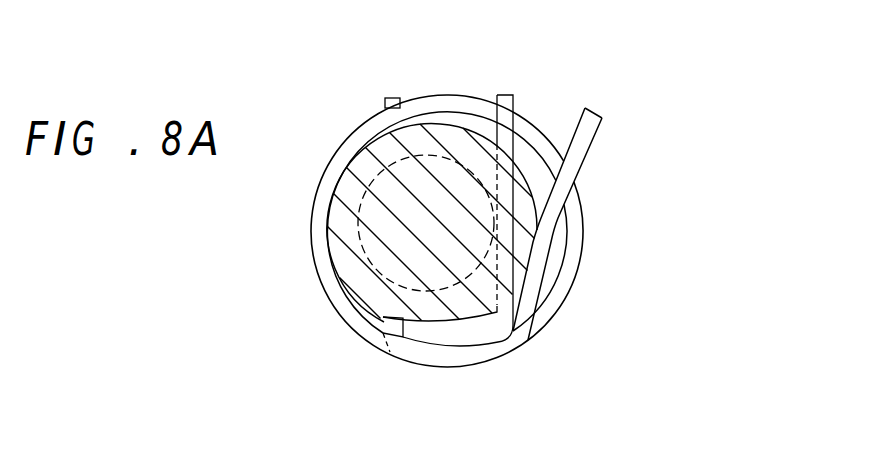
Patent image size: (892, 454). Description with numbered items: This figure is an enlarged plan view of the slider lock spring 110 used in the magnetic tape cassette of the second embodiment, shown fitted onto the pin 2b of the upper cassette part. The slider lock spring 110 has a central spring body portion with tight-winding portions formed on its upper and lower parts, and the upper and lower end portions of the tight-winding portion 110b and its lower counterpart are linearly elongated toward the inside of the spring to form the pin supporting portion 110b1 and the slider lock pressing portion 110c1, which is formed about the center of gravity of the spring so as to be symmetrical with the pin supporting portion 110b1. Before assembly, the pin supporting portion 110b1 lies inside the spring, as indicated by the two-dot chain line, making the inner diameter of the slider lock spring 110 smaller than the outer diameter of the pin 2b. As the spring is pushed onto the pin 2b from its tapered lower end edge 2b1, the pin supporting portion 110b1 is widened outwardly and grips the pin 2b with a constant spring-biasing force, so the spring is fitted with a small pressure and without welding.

The slider lock spring 110 is at (550, 103).
The tight-winding portion 110b is at (526, 329).
The pin supporting portion 110b1 is at (582, 146).
The slider lock pressing portion 110c1 is at (393, 97).
The pin 2b is at (345, 221).
The tapered lower end edge 2b1 is at (357, 306).